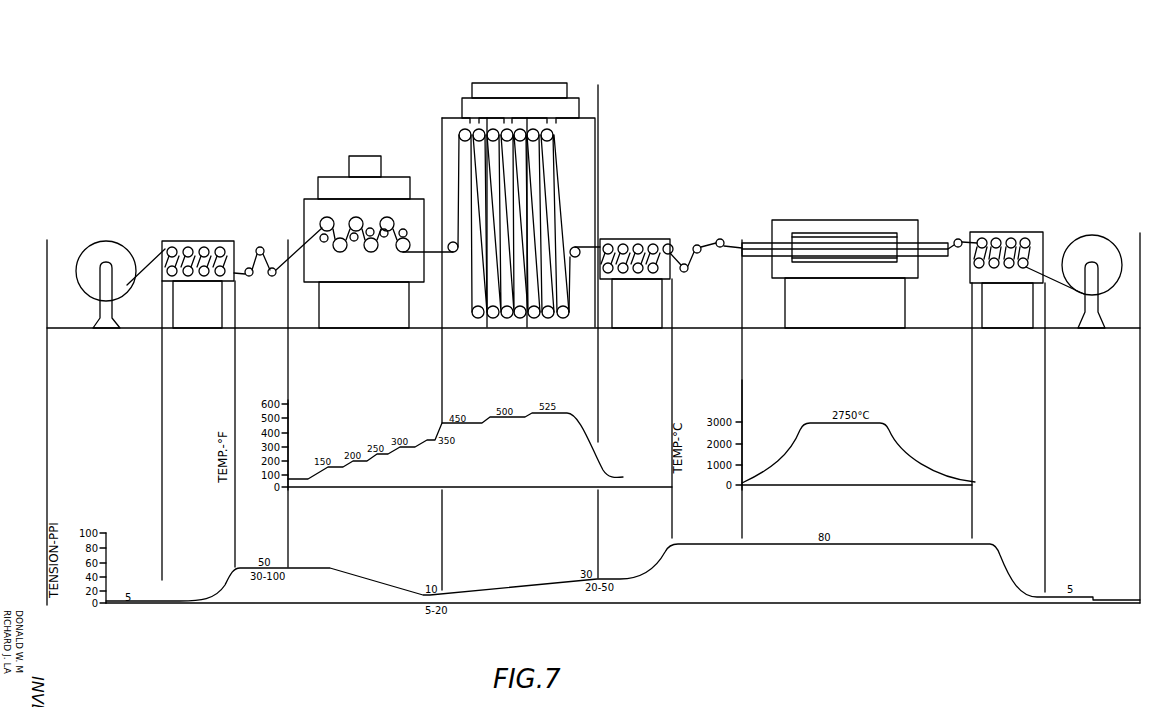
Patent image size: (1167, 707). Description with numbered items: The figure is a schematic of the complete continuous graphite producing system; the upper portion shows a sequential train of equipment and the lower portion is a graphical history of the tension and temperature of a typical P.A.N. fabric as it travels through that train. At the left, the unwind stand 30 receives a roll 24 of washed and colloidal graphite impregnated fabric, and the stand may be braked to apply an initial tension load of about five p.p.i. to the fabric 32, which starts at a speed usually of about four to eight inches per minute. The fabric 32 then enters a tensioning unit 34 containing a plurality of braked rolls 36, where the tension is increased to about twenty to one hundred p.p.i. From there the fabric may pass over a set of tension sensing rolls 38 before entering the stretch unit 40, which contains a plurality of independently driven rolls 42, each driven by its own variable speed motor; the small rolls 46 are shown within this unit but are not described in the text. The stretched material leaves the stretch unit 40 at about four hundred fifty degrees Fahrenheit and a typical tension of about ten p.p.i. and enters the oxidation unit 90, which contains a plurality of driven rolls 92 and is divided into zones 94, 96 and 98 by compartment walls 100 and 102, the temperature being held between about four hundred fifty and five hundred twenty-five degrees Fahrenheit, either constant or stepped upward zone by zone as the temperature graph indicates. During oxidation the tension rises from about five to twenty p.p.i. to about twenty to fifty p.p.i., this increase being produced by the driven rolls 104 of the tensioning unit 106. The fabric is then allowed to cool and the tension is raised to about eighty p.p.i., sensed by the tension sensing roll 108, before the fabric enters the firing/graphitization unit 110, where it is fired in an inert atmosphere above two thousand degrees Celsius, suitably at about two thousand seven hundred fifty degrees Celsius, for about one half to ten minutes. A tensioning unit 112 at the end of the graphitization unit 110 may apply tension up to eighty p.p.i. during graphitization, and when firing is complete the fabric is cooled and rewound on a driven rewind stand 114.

The roll 24 is at (95, 246).
The unwind stand 30 is at (92, 321).
The fabric 32 is at (149, 263).
The tensioning unit 34 is at (178, 241).
The braked rolls 36 is at (196, 246).
The tension sensing rolls 38 is at (268, 246).
The stretch unit 40 is at (366, 152).
The independently driven rolls 42 is at (338, 222).
The small guide rollers 46 is at (374, 229).
The oxidation unit 90 is at (518, 79).
The driven rolls 92 is at (553, 135).
The zone 94 is at (452, 128).
The zone 96 is at (515, 120).
The zone 98 is at (570, 128).
The compartment wall 100 is at (489, 327).
The compartment wall 102 is at (530, 327).
The driven rolls 104 is at (638, 244).
The tensioning unit 106 is at (620, 240).
The tension sensing roll 108 is at (703, 237).
The firing/graphitization unit 110 is at (842, 222).
The tensioning unit 112 is at (1000, 235).
The rewind stand 114 is at (1099, 298).